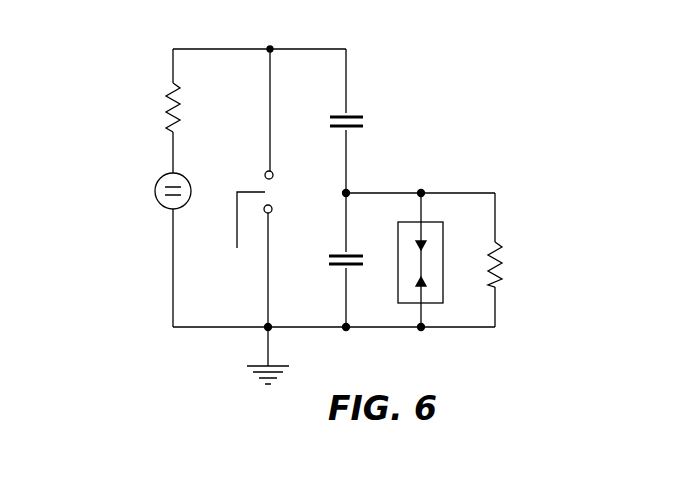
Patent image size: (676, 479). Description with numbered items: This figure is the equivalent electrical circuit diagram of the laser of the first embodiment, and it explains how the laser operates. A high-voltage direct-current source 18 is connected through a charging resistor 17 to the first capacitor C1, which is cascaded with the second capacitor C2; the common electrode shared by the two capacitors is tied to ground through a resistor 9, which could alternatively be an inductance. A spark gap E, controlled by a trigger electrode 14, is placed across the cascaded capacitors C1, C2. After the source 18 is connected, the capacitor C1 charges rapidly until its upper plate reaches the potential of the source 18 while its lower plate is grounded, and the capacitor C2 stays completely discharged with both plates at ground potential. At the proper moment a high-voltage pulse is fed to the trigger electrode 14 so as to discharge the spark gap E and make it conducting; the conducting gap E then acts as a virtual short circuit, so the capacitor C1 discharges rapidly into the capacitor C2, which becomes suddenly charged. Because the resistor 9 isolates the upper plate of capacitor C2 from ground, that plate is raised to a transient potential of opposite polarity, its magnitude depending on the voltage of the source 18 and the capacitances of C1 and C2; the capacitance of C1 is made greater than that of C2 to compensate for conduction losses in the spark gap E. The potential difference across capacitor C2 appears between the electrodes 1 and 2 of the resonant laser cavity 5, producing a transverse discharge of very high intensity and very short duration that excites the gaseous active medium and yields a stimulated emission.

The charging resistor 17 is at (166, 100).
The high-voltage direct-current source 18 is at (155, 190).
The trigger electrode 14 is at (236, 243).
The spark gap E is at (258, 181).
The first capacitor C1 is at (360, 124).
The second capacitor C2 is at (332, 262).
The resonant laser cavity 5 is at (422, 260).
The metallic lip or flange 1 is at (430, 246).
The longitudinal metal rib or flange 2 is at (430, 273).
The resistor 9 is at (502, 258).